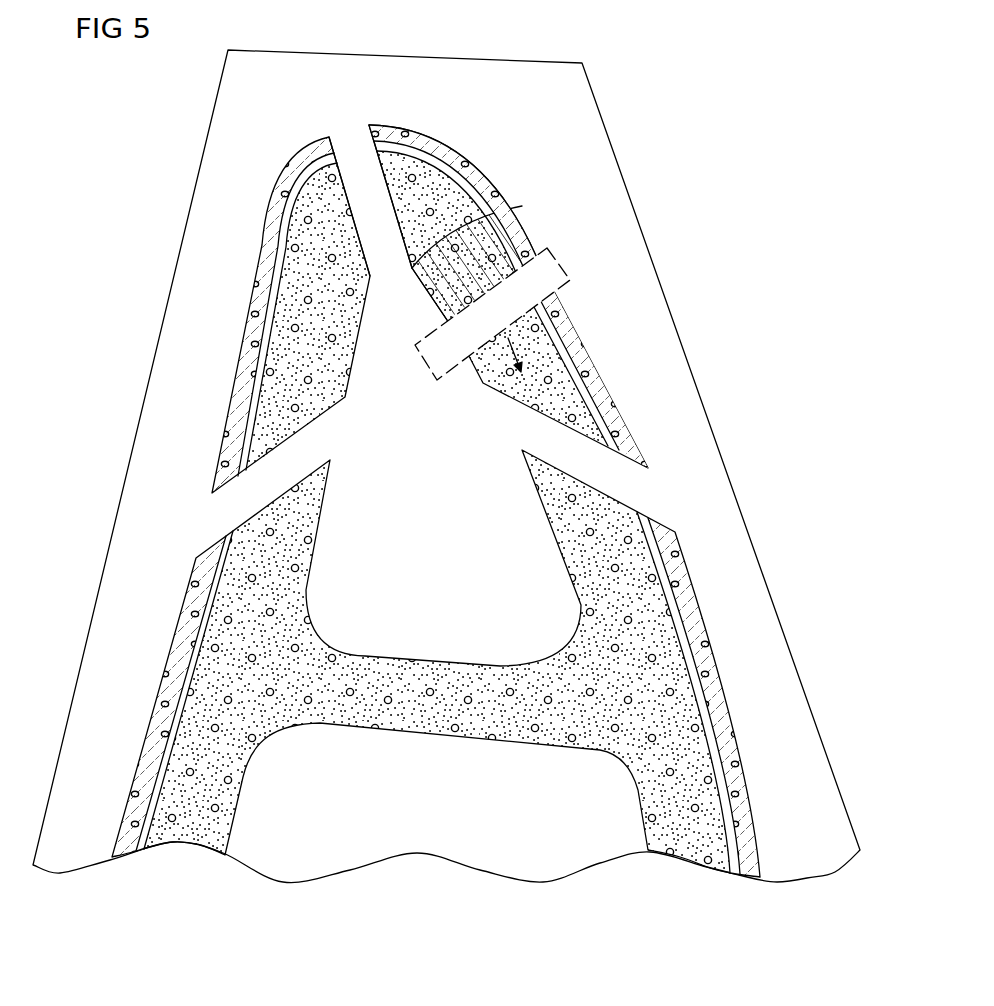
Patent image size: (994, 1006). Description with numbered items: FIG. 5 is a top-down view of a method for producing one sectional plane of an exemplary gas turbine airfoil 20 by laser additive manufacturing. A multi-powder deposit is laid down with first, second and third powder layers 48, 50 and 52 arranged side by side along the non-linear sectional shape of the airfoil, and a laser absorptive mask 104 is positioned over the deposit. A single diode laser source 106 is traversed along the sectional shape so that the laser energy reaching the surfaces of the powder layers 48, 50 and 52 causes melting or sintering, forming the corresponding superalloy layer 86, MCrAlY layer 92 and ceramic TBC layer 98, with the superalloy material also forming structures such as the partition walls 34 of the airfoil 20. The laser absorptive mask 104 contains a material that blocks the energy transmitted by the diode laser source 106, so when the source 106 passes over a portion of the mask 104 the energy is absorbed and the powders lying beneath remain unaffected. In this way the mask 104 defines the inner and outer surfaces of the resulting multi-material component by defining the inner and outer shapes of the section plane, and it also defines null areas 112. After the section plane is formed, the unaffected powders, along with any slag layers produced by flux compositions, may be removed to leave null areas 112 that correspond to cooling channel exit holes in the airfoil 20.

The gas turbine airfoil 20 is at (480, 143).
The partition walls 34 is at (447, 683).
The first powder layer 48 is at (237, 617).
The second powder layer 50 is at (198, 655).
The third powder layer 52 is at (165, 720).
The superalloy layer 86 is at (453, 277).
The MCrAlY layer 92 is at (483, 233).
The ceramic TBC layer 98 is at (505, 243).
The laser absorptive mask 104 is at (601, 121).
The diode laser source 106 is at (560, 263).
The null areas 112 is at (353, 147).